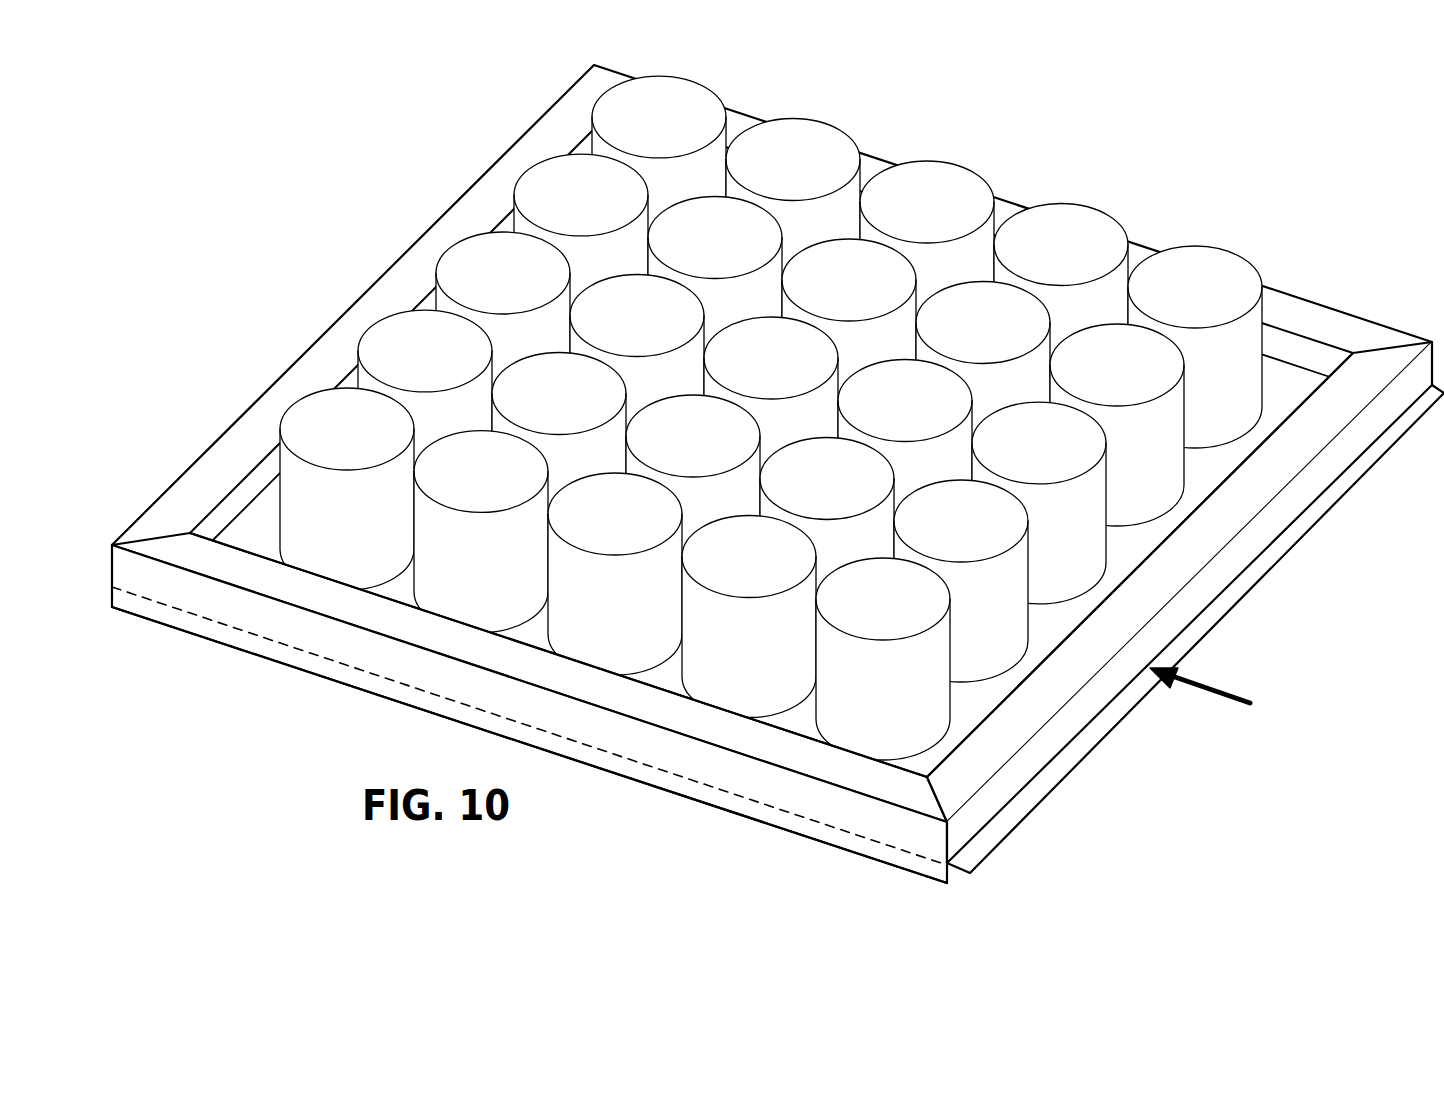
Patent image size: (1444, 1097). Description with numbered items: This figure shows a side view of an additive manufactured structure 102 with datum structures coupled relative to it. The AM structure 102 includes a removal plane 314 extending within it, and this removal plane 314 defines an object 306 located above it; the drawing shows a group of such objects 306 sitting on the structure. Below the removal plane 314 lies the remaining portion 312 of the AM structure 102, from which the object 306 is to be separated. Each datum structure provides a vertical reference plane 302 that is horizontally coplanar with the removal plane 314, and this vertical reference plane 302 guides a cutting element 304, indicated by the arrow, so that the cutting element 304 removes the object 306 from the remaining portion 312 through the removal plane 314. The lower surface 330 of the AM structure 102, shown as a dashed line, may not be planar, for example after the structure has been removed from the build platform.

The AM structure 102 is at (763, 504).
The vertical reference plane 302 is at (112, 591).
The cutting element 304 is at (1202, 690).
The object 306 is at (1315, 433).
The remaining portion 312 is at (710, 800).
The removal plane 314 is at (893, 850).
The lower surface 330 is at (578, 740).